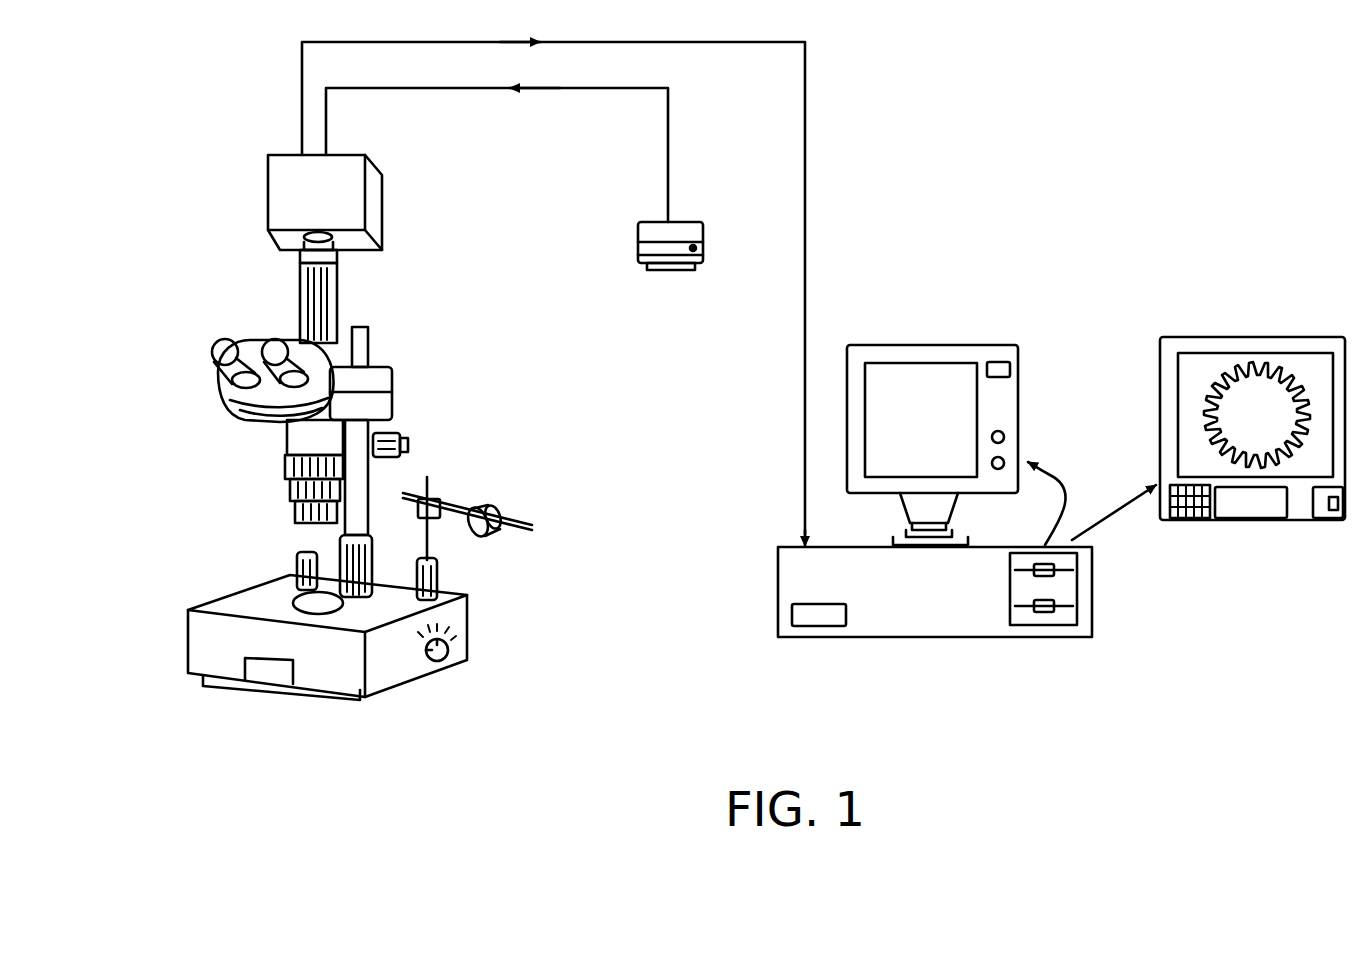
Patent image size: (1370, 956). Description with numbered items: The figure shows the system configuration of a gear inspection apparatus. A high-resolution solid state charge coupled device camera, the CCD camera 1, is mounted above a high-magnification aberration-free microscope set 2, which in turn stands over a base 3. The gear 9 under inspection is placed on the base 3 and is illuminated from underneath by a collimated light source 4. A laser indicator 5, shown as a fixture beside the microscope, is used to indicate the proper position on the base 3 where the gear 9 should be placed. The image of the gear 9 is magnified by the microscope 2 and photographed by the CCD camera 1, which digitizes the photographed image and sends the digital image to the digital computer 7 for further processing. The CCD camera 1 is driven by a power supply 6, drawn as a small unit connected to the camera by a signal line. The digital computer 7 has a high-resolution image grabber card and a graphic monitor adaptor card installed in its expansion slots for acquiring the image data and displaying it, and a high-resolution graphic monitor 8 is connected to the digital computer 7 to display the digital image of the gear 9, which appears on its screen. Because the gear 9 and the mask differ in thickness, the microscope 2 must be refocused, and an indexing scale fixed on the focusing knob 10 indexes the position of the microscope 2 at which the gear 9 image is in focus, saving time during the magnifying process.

The CCD camera 1 is at (268, 178).
The microscope set 2 is at (285, 476).
The base 3 is at (187, 623).
The collimated light source 4 is at (270, 680).
The laser indicator 5 is at (518, 507).
The power supply 6 is at (638, 248).
The digital computer 7 is at (910, 637).
The high-resolution graphic monitor 8 is at (1302, 512).
The gear 9 is at (332, 603).
The focusing knob 10 is at (390, 432).